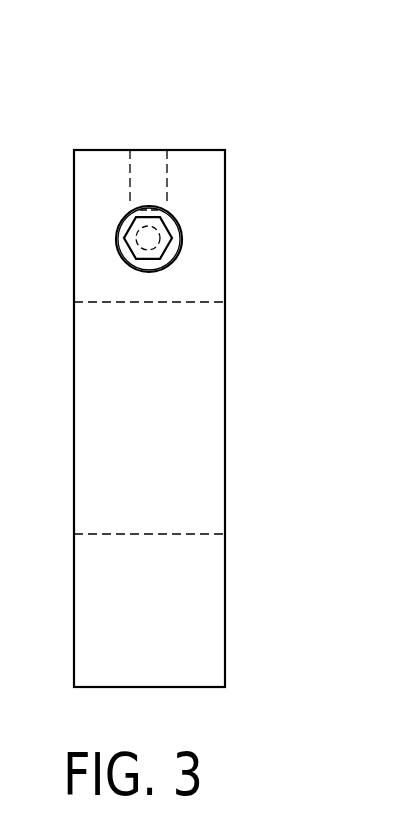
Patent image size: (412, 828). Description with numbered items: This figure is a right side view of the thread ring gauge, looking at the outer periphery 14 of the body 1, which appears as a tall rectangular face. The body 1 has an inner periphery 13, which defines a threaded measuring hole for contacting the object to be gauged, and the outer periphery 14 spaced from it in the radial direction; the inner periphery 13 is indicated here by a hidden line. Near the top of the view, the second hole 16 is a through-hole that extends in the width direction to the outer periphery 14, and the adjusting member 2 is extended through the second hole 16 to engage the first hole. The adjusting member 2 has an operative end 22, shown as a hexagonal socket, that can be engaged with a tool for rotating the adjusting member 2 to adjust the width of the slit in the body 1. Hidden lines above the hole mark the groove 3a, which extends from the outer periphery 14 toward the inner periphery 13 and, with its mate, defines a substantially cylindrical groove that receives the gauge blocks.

The body 1 is at (65, 124).
The adjusting member 2 is at (205, 260).
The first groove 3a is at (167, 174).
The inner periphery 13 is at (162, 534).
The outer periphery 14 is at (205, 687).
The second hole 16 is at (167, 222).
The operative end 22 is at (169, 255).